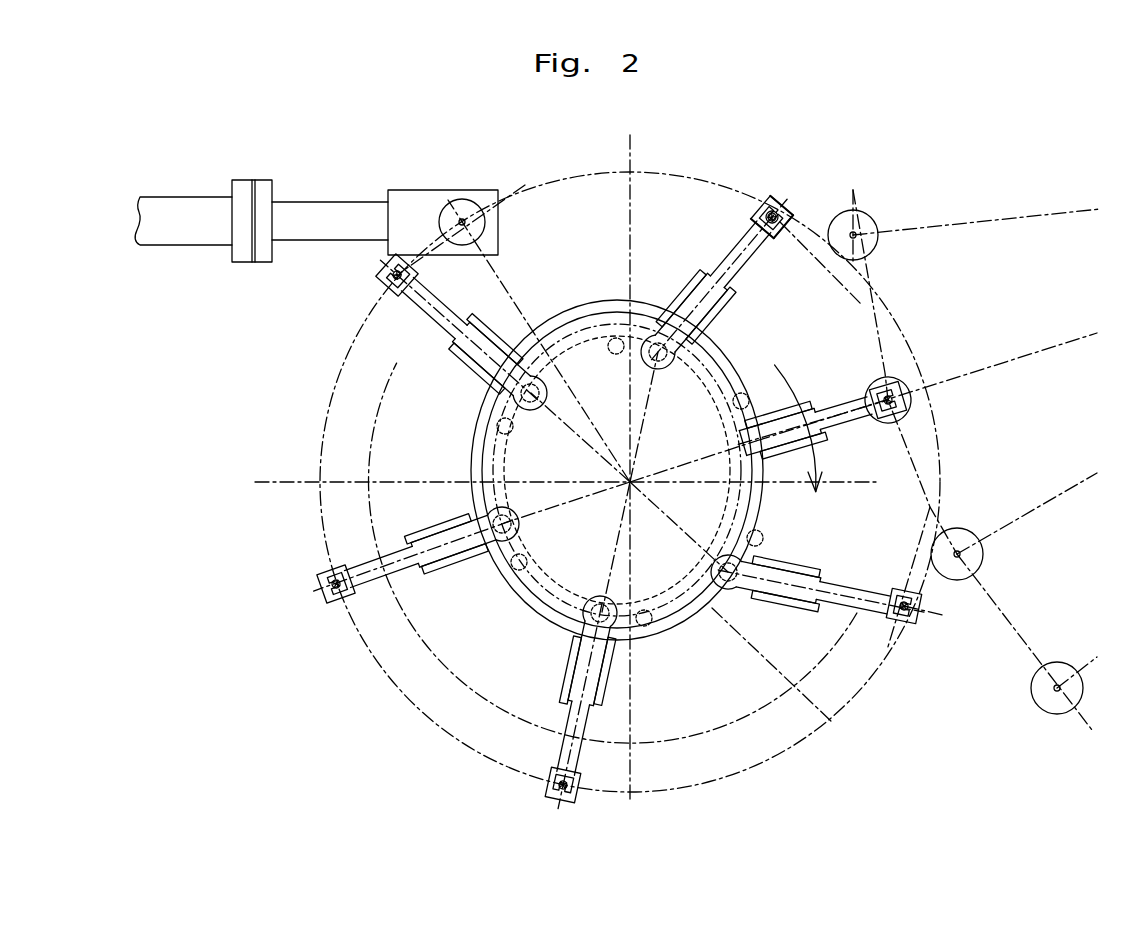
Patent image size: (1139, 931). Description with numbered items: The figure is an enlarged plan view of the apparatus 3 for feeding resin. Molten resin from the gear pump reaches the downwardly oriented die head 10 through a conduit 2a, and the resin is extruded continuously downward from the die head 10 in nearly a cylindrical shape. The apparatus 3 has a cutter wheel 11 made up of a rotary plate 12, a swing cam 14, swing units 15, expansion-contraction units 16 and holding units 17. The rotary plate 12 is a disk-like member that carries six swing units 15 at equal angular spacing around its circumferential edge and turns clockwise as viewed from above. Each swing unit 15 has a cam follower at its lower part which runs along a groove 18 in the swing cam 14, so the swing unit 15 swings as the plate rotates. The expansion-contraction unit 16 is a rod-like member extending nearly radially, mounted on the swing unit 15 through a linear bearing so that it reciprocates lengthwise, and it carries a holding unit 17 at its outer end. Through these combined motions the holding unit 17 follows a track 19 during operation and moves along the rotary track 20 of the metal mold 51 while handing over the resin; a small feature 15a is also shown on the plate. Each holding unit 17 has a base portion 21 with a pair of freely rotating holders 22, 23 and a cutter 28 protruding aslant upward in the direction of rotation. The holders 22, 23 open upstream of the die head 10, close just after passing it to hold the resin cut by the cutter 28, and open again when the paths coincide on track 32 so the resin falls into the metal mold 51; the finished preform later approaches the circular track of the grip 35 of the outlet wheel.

The conduit 2a is at (318, 215).
The apparatus for feeding resin 3 is at (285, 432).
The die head 10 is at (476, 190).
The cutter wheel 11 is at (490, 402).
The rotary plate 12 is at (803, 608).
The swing cam 14 is at (842, 716).
The swing unit 15 is at (868, 616).
The clamp jaw 15a is at (745, 530).
The expansion-contraction unit 16 is at (882, 653).
The holding unit 17 is at (886, 375).
The groove 18 is at (752, 492).
The track 19 is at (332, 372).
The rotary track 20 is at (1090, 726).
The base portion 21 is at (790, 193).
The holder 22 is at (772, 217).
The holder 23 is at (783, 226).
The cutter 28 is at (762, 228).
The track 32 is at (912, 457).
The grip 35 is at (581, 720).
The metal mold 51 is at (876, 224).